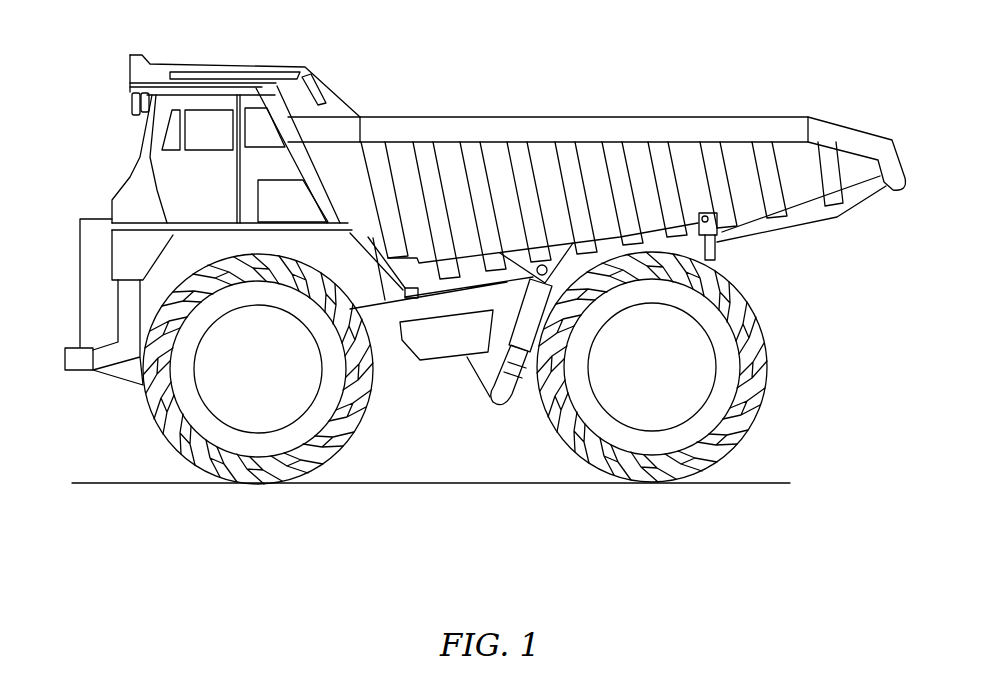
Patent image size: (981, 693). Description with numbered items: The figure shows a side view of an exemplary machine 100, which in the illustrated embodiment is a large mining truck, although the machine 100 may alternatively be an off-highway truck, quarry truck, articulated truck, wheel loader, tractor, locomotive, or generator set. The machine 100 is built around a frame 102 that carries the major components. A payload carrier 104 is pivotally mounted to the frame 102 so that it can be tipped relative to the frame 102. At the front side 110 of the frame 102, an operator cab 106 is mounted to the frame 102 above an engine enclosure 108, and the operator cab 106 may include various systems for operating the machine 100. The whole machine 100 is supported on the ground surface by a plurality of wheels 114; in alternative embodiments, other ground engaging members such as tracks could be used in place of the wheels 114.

The machine 100 is at (856, 56).
The frame 102 is at (390, 328).
The payload carrier 104 is at (698, 122).
The operator cab 106 is at (146, 131).
The engine enclosure 108 is at (78, 387).
The front side 110 is at (78, 190).
The wheels 114 is at (357, 418).